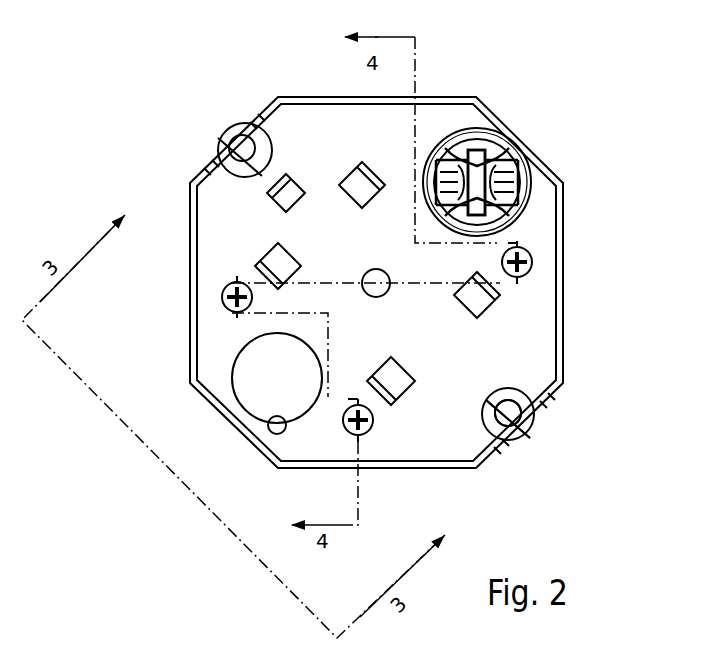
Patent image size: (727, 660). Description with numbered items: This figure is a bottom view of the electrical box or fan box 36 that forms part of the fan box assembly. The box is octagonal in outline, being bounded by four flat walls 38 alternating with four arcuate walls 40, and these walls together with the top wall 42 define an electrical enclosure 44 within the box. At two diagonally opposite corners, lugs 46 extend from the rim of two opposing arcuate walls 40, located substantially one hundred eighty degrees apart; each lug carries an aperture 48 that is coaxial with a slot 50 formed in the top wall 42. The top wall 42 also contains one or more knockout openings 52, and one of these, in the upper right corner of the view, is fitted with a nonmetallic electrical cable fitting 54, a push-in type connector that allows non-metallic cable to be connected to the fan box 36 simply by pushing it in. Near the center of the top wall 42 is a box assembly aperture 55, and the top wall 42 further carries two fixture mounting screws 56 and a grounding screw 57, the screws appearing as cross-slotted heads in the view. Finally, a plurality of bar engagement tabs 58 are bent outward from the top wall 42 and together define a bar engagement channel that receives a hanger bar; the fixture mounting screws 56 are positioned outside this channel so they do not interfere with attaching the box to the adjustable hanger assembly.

The electrical box 36 is at (132, 98).
The flat wall 38 is at (563, 305).
The arcuate wall 40 is at (520, 130).
The top wall 42 is at (414, 222).
The electrical enclosure 44 is at (307, 117).
The lug 46 is at (490, 398).
The aperture 48 is at (520, 422).
The slot 50 is at (505, 432).
The knockout opening 52 is at (277, 383).
The nonmetallic electrical cable fitting 54 is at (520, 170).
The box assembly aperture 55 is at (385, 293).
The fixture mounting screw 56 is at (373, 420).
The grounding screw 57 is at (532, 262).
The bar engagement tab 58 is at (368, 176).